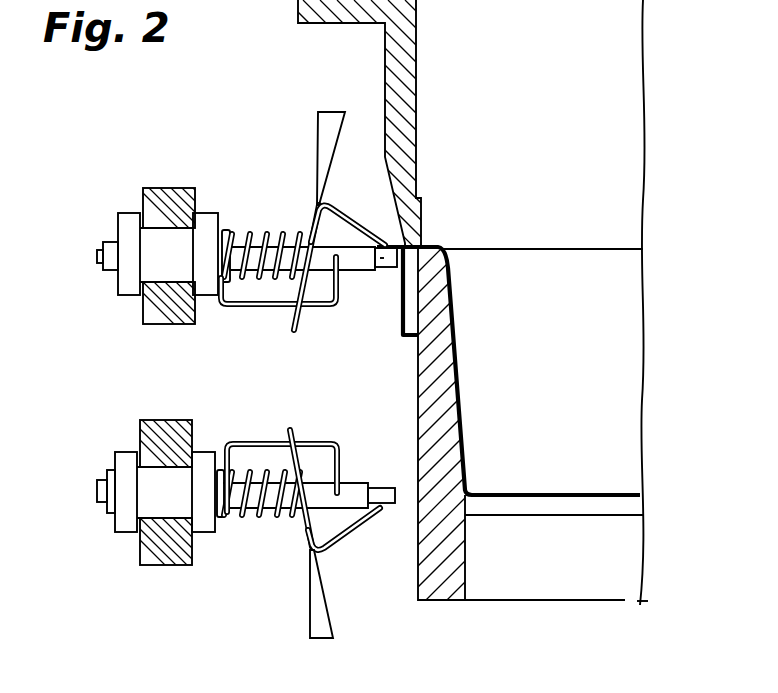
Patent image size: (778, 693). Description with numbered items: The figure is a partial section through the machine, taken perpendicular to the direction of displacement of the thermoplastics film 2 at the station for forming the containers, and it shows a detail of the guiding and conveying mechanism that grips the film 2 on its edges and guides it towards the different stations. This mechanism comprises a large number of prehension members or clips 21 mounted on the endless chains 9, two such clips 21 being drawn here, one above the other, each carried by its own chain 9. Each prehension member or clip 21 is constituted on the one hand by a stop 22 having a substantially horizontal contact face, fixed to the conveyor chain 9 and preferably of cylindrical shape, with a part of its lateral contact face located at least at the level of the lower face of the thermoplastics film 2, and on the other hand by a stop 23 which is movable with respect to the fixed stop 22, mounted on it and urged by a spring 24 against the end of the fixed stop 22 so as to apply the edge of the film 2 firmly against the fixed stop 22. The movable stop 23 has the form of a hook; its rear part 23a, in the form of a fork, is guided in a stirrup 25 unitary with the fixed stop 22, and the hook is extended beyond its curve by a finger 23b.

The thermoplastics film 2 is at (425, 245).
The endless chain 9 is at (158, 189).
The prehension member or clip 21 is at (367, 296).
The fixed stop 22 is at (383, 262).
The movable stop 23 is at (363, 192).
The rear part 23a is at (308, 294).
The finger 23b is at (345, 130).
The spring 24 is at (268, 232).
The stirrup 25 is at (256, 310).